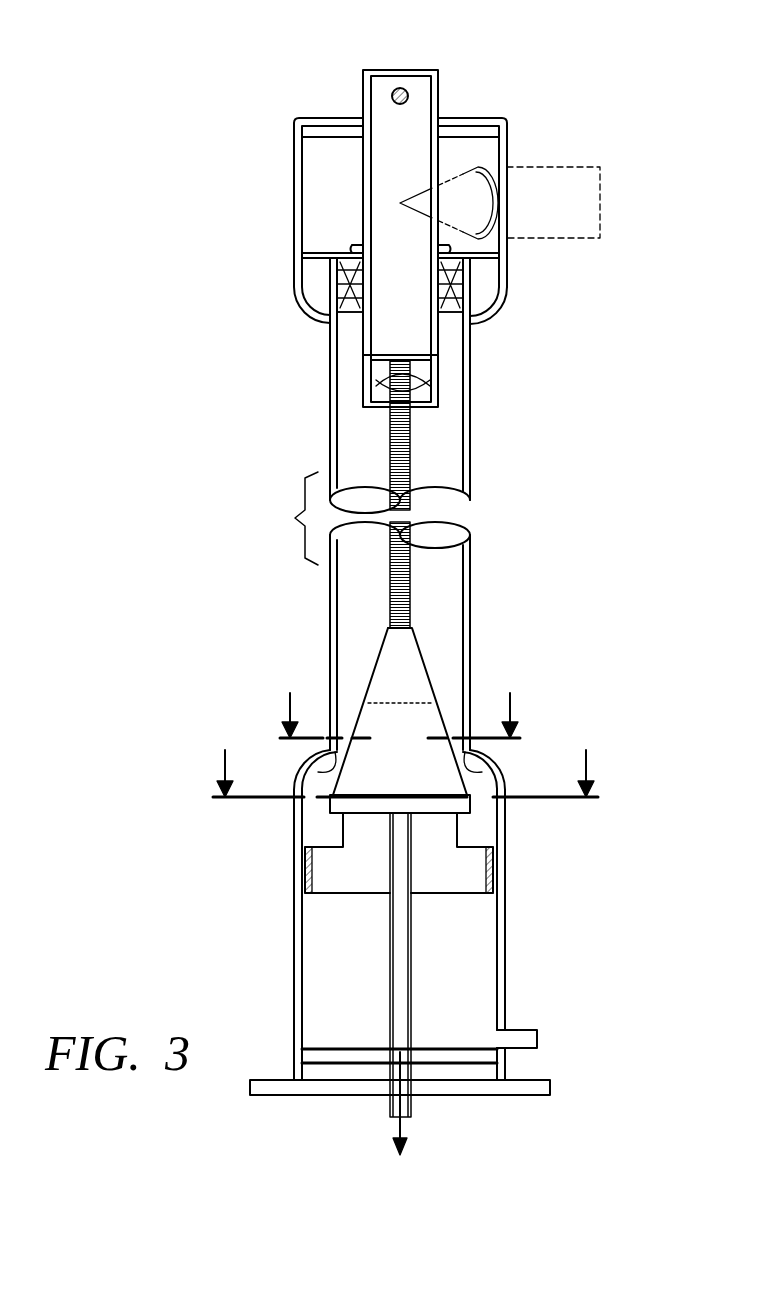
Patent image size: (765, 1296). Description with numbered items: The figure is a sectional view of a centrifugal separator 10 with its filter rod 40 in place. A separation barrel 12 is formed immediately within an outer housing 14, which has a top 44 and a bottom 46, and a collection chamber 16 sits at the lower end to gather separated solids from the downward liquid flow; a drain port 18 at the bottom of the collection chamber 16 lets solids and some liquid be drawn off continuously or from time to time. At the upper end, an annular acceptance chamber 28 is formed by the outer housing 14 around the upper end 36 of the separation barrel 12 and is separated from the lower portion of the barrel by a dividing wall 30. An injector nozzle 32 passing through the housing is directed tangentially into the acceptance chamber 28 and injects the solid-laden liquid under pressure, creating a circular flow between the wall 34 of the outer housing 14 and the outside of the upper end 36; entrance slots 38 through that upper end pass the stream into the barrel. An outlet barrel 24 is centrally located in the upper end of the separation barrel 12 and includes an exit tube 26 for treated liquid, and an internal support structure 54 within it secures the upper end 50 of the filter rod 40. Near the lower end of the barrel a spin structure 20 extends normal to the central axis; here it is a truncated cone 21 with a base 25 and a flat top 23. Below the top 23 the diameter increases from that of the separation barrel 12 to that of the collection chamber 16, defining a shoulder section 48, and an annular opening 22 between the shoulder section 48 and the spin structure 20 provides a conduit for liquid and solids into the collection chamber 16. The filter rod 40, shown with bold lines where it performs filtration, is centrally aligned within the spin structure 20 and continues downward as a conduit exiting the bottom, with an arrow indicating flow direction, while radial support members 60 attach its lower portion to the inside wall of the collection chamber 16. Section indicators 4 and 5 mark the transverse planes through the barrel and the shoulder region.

The centrifugal separator 10 is at (208, 158).
The separation barrel 12 is at (445, 572).
The outer housing 14 is at (472, 441).
The collection chamber 16 is at (505, 935).
The drain port 18 is at (525, 1030).
The spin structure 20 is at (417, 648).
The truncated cone 21 is at (380, 651).
The annular opening 22 is at (312, 770).
The top 23 is at (393, 606).
The outlet barrel 24 is at (366, 382).
The base 25 is at (478, 812).
The exit tube 26 is at (437, 97).
The acceptance chamber 28 is at (490, 278).
The dividing wall 30 is at (492, 308).
The injector nozzle 32 is at (572, 165).
The wall 34 is at (294, 232).
The upper end 36 is at (323, 292).
The entrance slots 38 is at (356, 328).
The filter rod 40 is at (415, 474).
The top 44 is at (333, 177).
The bottom 46 is at (294, 893).
The shoulder section 48 is at (505, 760).
The upper end 50 is at (425, 352).
The internal support structure 54 is at (432, 378).
The radial support members 60 is at (310, 863).
The section line 4- 4 is at (400, 702).
The section line 5- 5 is at (405, 760).